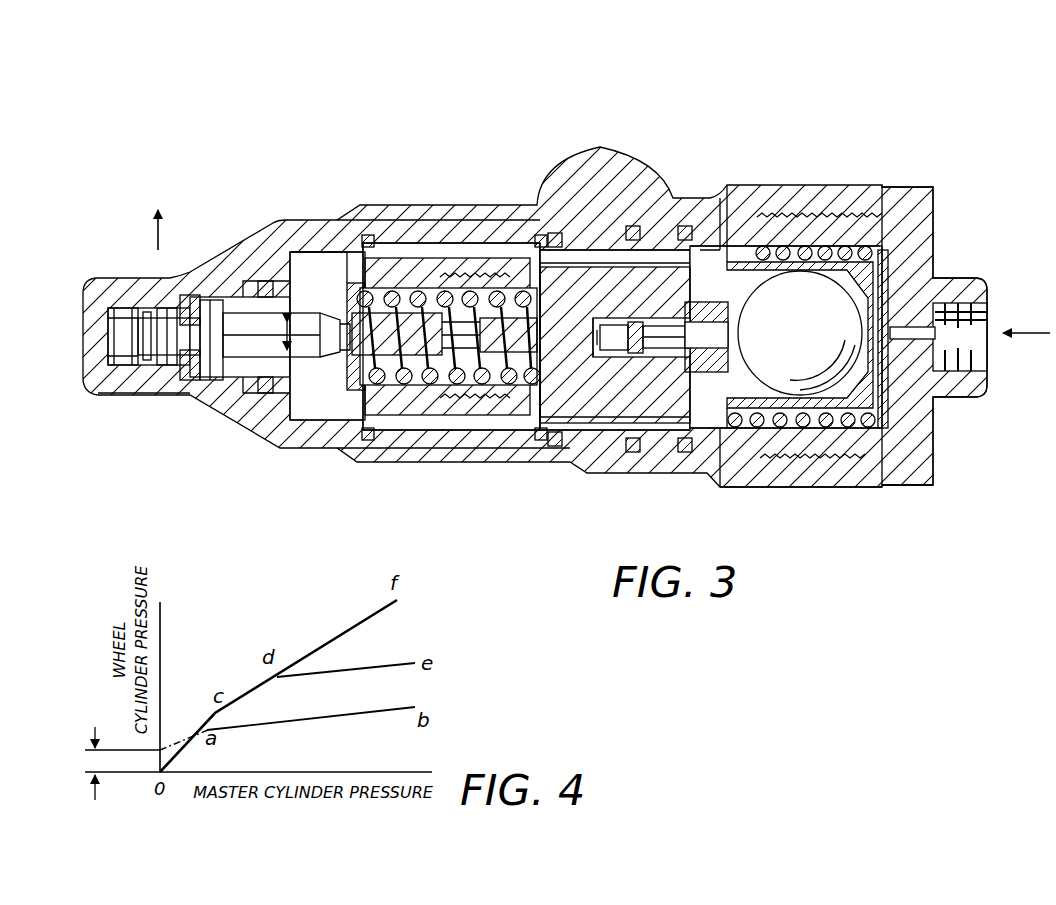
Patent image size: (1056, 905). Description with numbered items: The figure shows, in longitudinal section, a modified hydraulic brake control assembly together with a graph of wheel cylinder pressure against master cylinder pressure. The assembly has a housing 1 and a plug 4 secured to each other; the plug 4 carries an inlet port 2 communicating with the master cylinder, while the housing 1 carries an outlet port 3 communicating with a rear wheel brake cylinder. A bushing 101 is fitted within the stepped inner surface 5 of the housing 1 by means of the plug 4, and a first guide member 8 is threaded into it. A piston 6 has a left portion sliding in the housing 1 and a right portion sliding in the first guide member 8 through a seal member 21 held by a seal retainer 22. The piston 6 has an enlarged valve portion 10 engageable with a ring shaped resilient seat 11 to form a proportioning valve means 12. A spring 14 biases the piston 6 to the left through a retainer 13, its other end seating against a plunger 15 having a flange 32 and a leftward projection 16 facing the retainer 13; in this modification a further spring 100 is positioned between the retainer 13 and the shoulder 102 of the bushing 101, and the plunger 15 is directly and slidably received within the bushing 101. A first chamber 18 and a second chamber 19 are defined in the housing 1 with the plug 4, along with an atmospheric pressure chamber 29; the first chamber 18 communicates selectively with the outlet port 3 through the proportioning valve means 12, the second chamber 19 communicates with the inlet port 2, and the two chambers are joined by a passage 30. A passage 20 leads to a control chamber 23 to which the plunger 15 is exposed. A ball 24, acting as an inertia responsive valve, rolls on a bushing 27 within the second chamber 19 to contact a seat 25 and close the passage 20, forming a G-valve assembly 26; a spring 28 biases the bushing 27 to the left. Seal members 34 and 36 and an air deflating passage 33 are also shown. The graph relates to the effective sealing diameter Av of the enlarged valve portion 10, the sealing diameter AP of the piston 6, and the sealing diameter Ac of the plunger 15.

The housing 1 is at (633, 178).
The inlet port 2 is at (973, 352).
The outlet port 3 is at (128, 300).
The plug 4 is at (920, 213).
The stepped inner surface 5 is at (380, 440).
The piston 6 is at (233, 323).
The first guide member 8 is at (500, 432).
The enlarged valve portion 10 is at (165, 312).
The ring shaped resilient seat 11 is at (200, 312).
The proportioning valve means 12 is at (157, 382).
The retainer 13 is at (372, 296).
The spring 14 is at (500, 268).
The plunger 15 is at (600, 267).
The leftward projection 16 is at (490, 400).
The first chamber 18 is at (304, 262).
The second chamber 19 is at (745, 312).
The passage 20 is at (737, 382).
The seal member 21 is at (278, 360).
The seal retainer 22 is at (267, 387).
The control chamber 23 is at (655, 362).
The ball 24 is at (840, 250).
The seat 25 is at (806, 287).
The G-valve assembly 26 is at (753, 437).
The bushing 27 is at (893, 455).
The spring 28 is at (885, 250).
The atmospheric pressure chamber 29 is at (483, 392).
The passage 30 is at (708, 280).
The flange 32 is at (550, 400).
The air deflating passage 33 is at (630, 250).
The seal member 34 is at (552, 233).
The seal member 36 is at (684, 226).
The further spring 100 is at (468, 290).
The bushing 101 is at (578, 400).
The shoulder 102 is at (563, 400).
The effective sealing diameter of the enlarged valve portion Av is at (150, 393).
The sealing diameter of the piston AP is at (289, 360).
The sealing diameter of the plunger Ac is at (598, 413).